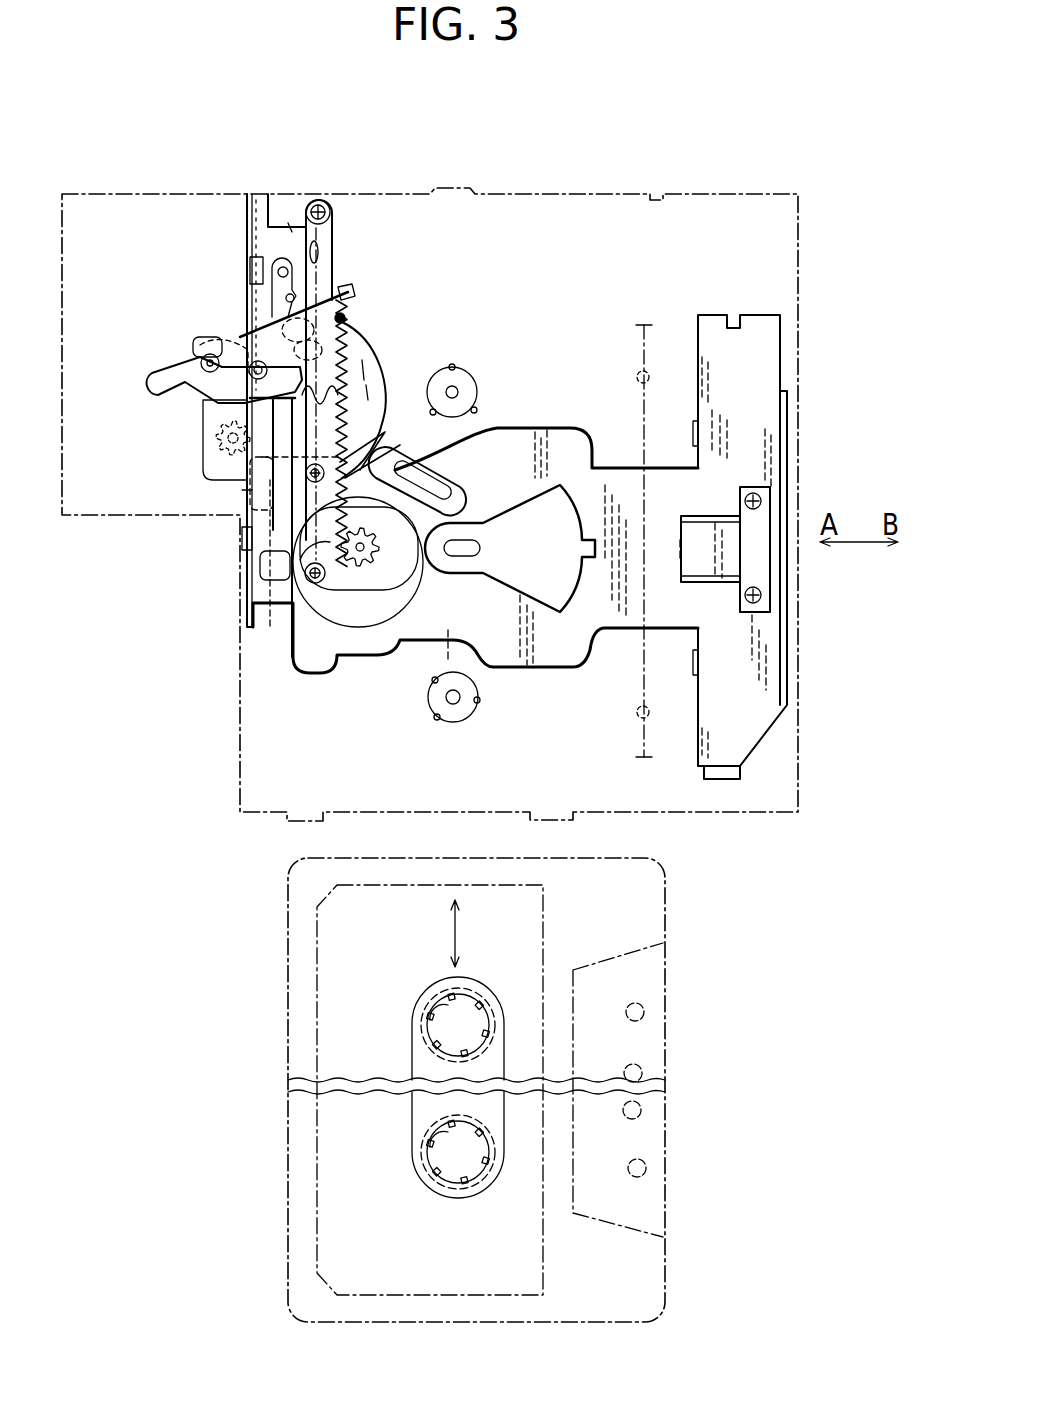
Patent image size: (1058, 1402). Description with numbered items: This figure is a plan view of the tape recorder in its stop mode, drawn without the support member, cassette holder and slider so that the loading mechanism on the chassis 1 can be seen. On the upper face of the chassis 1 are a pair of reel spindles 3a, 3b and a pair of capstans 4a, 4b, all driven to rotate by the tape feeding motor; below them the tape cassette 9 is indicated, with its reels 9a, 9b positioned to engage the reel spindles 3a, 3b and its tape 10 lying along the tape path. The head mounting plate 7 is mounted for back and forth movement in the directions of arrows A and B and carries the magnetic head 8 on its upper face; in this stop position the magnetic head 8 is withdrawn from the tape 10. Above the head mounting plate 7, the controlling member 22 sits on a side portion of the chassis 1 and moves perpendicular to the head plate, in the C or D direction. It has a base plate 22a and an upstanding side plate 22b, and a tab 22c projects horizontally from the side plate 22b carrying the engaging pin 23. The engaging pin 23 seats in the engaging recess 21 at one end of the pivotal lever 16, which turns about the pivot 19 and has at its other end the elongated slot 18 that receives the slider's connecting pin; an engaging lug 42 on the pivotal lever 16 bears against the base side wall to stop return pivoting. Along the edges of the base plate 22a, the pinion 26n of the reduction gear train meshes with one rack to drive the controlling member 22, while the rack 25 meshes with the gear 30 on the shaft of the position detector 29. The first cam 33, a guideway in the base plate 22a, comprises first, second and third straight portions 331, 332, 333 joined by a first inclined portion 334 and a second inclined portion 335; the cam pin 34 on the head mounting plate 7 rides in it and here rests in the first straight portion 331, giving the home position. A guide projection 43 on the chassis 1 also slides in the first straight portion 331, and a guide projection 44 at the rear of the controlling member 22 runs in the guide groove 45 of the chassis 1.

The chassis 1 is at (180, 192).
The reel spindle 3a is at (478, 381).
The reel spindle 3b is at (463, 723).
The capstan 4a is at (637, 377).
The capstan 4b is at (637, 712).
The head mounting plate 7 is at (788, 665).
The magnetic head 8 is at (681, 558).
The tape cassette 9 is at (665, 968).
The reel 9a is at (430, 1022).
The reel 9b is at (438, 1145).
The tape 10 is at (643, 740).
The pivotal lever 16 is at (383, 378).
The elongated slot 18 is at (460, 474).
The pivot 19 is at (248, 372).
The engaging recess 21 is at (180, 355).
The controlling member 22 is at (196, 477).
The base plate 22a is at (335, 240).
The side plate 22b is at (238, 273).
The tab 22c is at (225, 493).
The engaging pin 23 is at (214, 352).
The rack 25 is at (385, 540).
The pinion 26n is at (215, 437).
The position detector 29 is at (418, 615).
The gear 30 is at (415, 592).
The first cam 33 is at (283, 560).
The first straight portion 331 is at (350, 590).
The second straight portion 332 is at (348, 320).
The third straight portion 333 is at (300, 270).
The first inclined portion 334 is at (344, 343).
The second inclined portion 335 is at (354, 286).
The cam pin 34 is at (372, 452).
The engaging lug 42 is at (344, 315).
The guide projection 43 is at (317, 585).
The guide projection 44 is at (319, 200).
The guide groove 45 is at (288, 223).